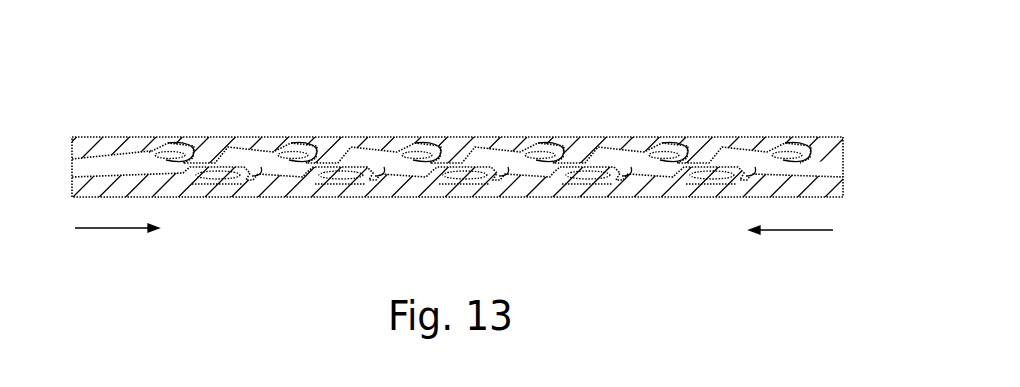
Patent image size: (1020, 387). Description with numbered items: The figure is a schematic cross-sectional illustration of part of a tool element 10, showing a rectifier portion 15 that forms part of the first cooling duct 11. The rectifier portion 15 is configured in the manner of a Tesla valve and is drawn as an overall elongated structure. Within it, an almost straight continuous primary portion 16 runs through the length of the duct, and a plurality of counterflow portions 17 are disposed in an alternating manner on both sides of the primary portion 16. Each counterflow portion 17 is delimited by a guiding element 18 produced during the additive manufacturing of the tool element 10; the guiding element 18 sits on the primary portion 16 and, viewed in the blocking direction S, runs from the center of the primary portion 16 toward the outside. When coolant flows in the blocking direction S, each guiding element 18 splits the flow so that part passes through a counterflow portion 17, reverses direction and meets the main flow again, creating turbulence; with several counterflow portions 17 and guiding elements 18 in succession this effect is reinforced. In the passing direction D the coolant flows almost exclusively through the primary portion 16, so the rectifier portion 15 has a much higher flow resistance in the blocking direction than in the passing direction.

The tool element 10 is at (828, 140).
The first cooling duct 11 is at (455, 121).
The rectifier portion 15 is at (457, 173).
The primary portion 16 is at (462, 165).
The counterflow portion 17 is at (507, 166).
The guiding element 18 is at (483, 112).